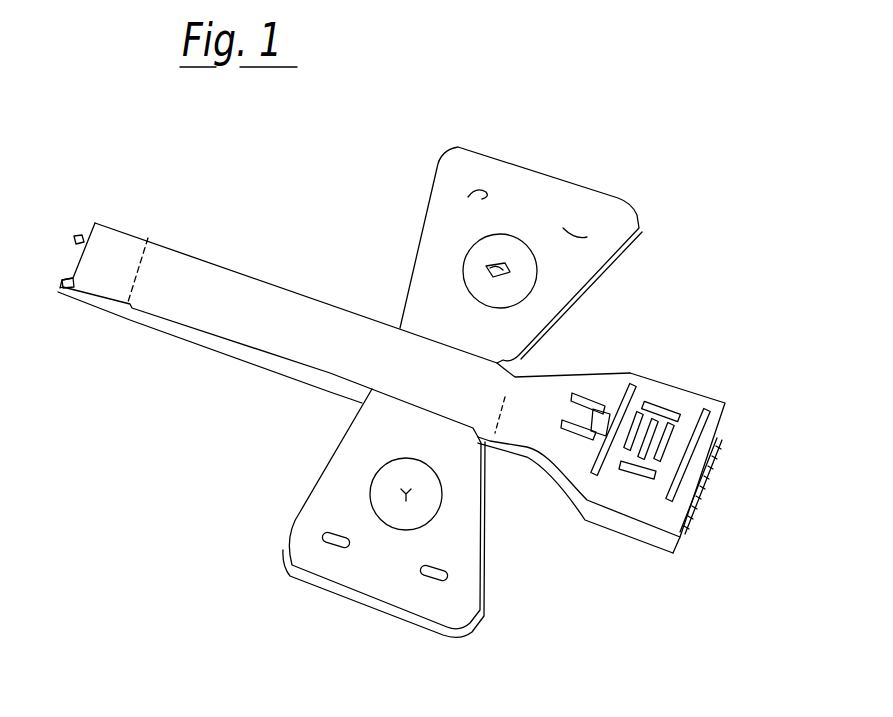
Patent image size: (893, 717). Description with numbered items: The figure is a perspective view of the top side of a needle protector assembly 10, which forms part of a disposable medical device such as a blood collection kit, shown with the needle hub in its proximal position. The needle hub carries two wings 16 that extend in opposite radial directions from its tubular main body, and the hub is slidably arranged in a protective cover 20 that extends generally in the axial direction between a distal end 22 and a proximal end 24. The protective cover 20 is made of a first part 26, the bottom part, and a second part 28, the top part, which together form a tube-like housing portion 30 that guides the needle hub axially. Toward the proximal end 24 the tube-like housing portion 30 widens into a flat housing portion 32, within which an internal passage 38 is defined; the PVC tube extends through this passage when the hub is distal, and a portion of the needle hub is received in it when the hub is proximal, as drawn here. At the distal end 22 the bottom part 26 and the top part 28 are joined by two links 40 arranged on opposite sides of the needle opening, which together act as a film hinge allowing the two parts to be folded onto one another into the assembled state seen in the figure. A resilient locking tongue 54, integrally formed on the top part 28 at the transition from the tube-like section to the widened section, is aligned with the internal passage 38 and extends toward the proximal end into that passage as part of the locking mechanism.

The needle protector assembly 10 is at (370, 188).
The wings 16 is at (560, 177).
The protective cover 20 is at (203, 259).
The distal end 22 is at (73, 262).
The proximal end 24 is at (683, 521).
The first part 26 is at (257, 368).
The second part 28 is at (273, 307).
The tube-like housing portion 30 is at (208, 338).
The flat housing portion 32 is at (623, 525).
The internal passage 38 is at (693, 495).
The links 40 is at (78, 236).
The locking tongue 54 is at (583, 415).